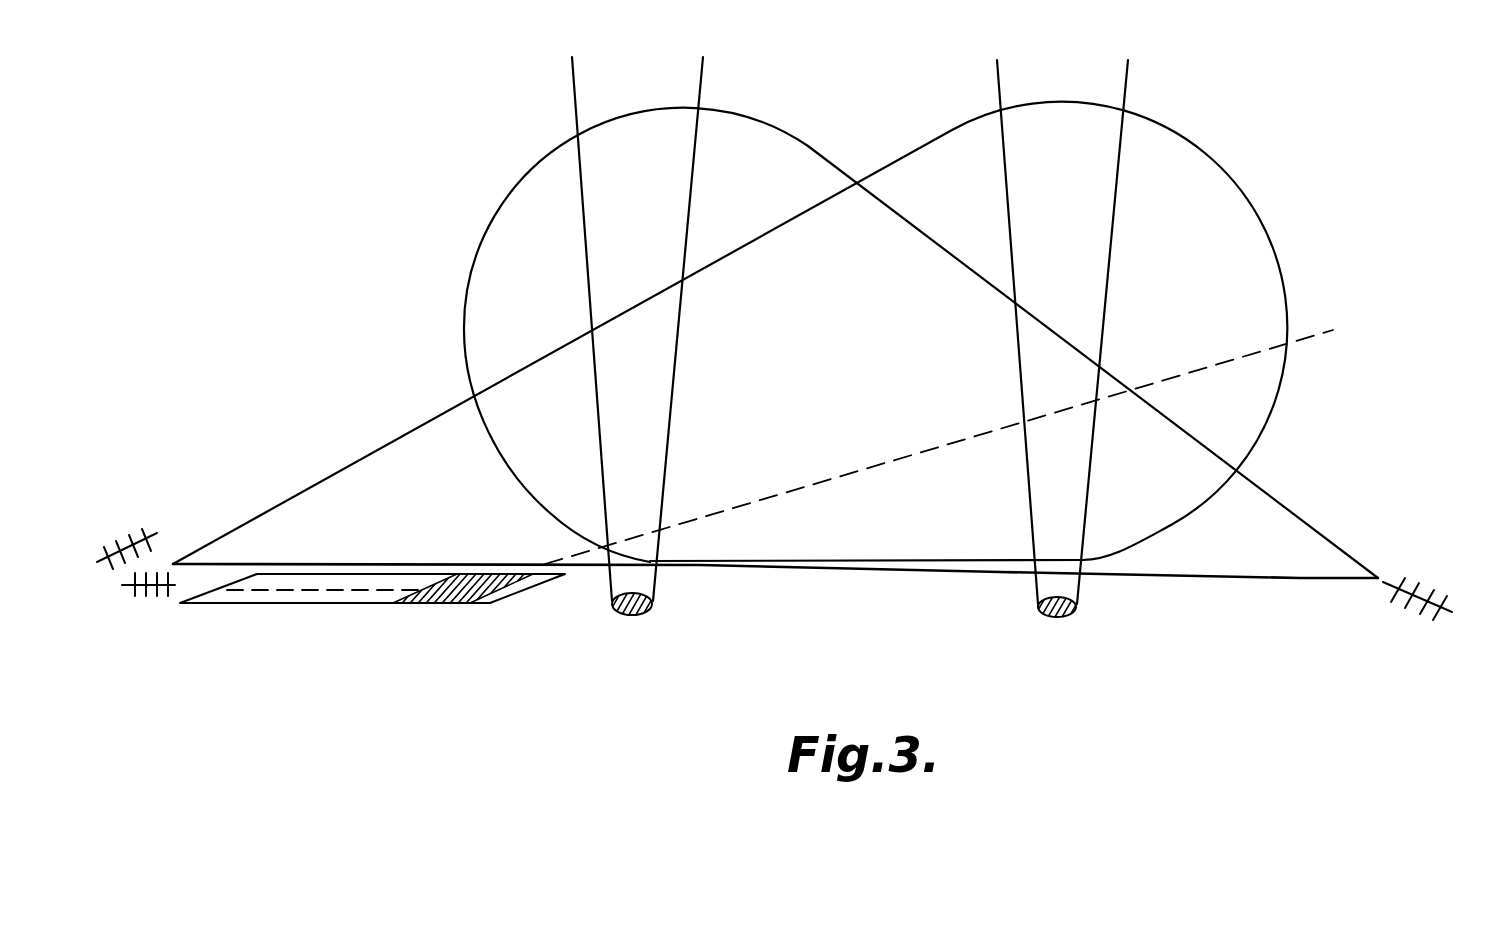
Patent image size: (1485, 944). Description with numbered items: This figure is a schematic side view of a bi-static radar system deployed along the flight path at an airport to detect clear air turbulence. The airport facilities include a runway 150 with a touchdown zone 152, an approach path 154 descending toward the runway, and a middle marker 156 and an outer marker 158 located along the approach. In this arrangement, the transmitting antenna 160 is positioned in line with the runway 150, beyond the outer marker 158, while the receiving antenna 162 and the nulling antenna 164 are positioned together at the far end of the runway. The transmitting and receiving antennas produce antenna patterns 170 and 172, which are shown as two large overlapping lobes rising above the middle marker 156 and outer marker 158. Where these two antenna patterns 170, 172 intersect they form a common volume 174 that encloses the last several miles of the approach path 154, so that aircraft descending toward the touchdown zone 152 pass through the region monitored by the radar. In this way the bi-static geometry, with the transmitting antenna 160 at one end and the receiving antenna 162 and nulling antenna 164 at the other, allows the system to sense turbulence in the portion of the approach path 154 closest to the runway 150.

The runway 150 is at (285, 605).
The touchdown zone 152 is at (432, 605).
The approach path 154 is at (907, 453).
The middle marker 156 is at (653, 606).
The outer marker 158 is at (1078, 607).
The transmitting antenna 160 is at (1426, 577).
The receiving antenna 162 is at (105, 551).
The nulling antenna 164 is at (135, 590).
The antenna pattern 170 is at (512, 207).
The antenna pattern 172 is at (1217, 172).
The common volume 174 is at (872, 273).